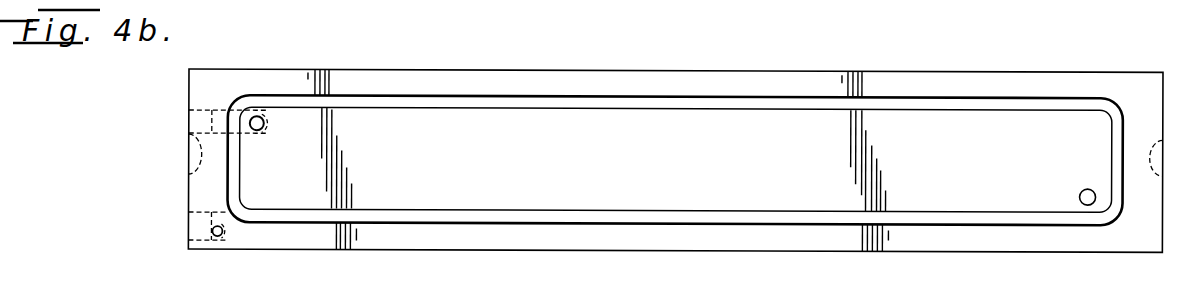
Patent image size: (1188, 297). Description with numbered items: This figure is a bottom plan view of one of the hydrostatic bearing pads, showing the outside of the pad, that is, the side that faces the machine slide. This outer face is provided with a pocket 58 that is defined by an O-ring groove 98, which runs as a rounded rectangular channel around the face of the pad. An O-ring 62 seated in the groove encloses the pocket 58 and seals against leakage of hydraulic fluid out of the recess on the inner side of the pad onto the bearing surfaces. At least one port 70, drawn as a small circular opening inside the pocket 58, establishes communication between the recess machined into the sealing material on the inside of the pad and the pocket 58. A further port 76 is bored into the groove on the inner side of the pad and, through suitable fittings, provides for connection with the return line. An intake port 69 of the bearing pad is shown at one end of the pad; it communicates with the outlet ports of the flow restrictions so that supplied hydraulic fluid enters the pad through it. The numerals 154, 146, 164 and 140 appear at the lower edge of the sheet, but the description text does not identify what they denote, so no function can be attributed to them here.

The pocket 58 is at (455, 176).
The O-ring 62 is at (904, 103).
The intake port 69 is at (190, 128).
The port 70 is at (1087, 187).
The port 76 is at (221, 236).
The O-ring groove 98 is at (363, 96).
The support member 154 is at (899, 290).
The bracket 146 is at (973, 290).
The spacer 164 is at (1045, 292).
The frame member 140 is at (1120, 293).